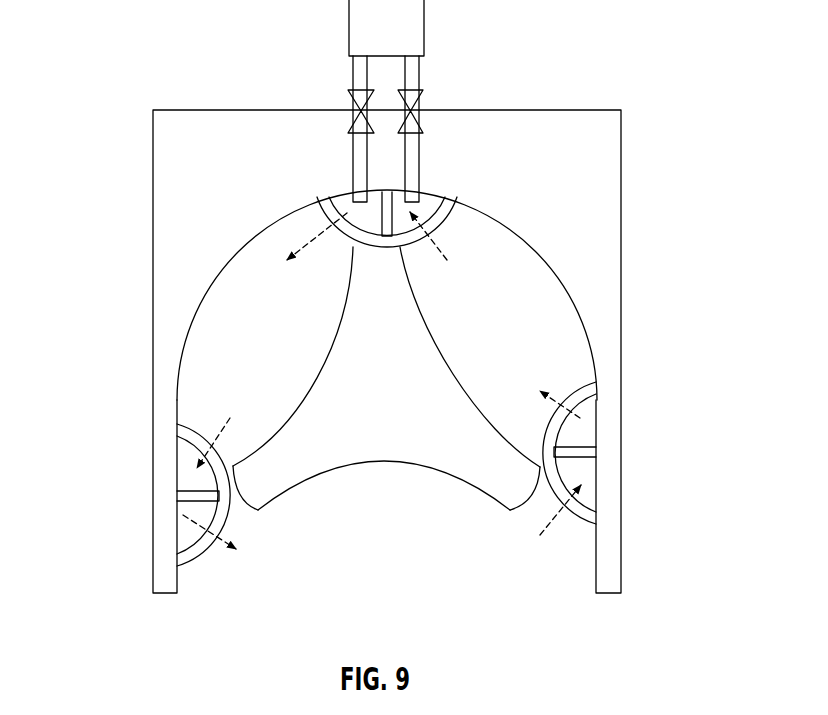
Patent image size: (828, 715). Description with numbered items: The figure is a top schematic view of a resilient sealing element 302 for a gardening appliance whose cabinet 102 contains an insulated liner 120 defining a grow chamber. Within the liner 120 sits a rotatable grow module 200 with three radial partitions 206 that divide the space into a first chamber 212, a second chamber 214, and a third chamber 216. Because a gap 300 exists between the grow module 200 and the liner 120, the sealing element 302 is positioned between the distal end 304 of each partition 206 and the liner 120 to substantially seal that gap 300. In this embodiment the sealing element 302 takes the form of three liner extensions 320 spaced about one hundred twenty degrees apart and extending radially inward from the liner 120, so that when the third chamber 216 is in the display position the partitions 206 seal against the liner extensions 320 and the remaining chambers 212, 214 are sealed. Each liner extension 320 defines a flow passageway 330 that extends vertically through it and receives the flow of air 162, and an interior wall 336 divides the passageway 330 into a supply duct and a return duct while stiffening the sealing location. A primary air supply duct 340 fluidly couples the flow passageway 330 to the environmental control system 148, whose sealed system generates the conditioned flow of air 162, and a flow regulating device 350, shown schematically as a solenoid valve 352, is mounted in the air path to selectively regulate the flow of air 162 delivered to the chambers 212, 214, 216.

The cabinet 102 is at (180, 110).
The environmental control system 148 is at (400, 36).
The primary air supply duct 340 is at (353, 77).
The solenoid valve 352 is at (346, 94).
The flow regulating device 350 is at (342, 135).
The insulated liner 120 is at (502, 223).
The liner extension 320 is at (402, 250).
The flow passageway 330 is at (182, 532).
The interior wall 336 is at (357, 234).
The flow of air 162 is at (312, 242).
The resilient sealing element 302 is at (355, 250).
The gap 300 is at (241, 521).
The distal end 304 is at (527, 509).
The partition 206 is at (483, 490).
The grow module 200 is at (405, 422).
The first chamber 212 is at (302, 349).
The second chamber 214 is at (510, 349).
The third chamber 216 is at (405, 519).